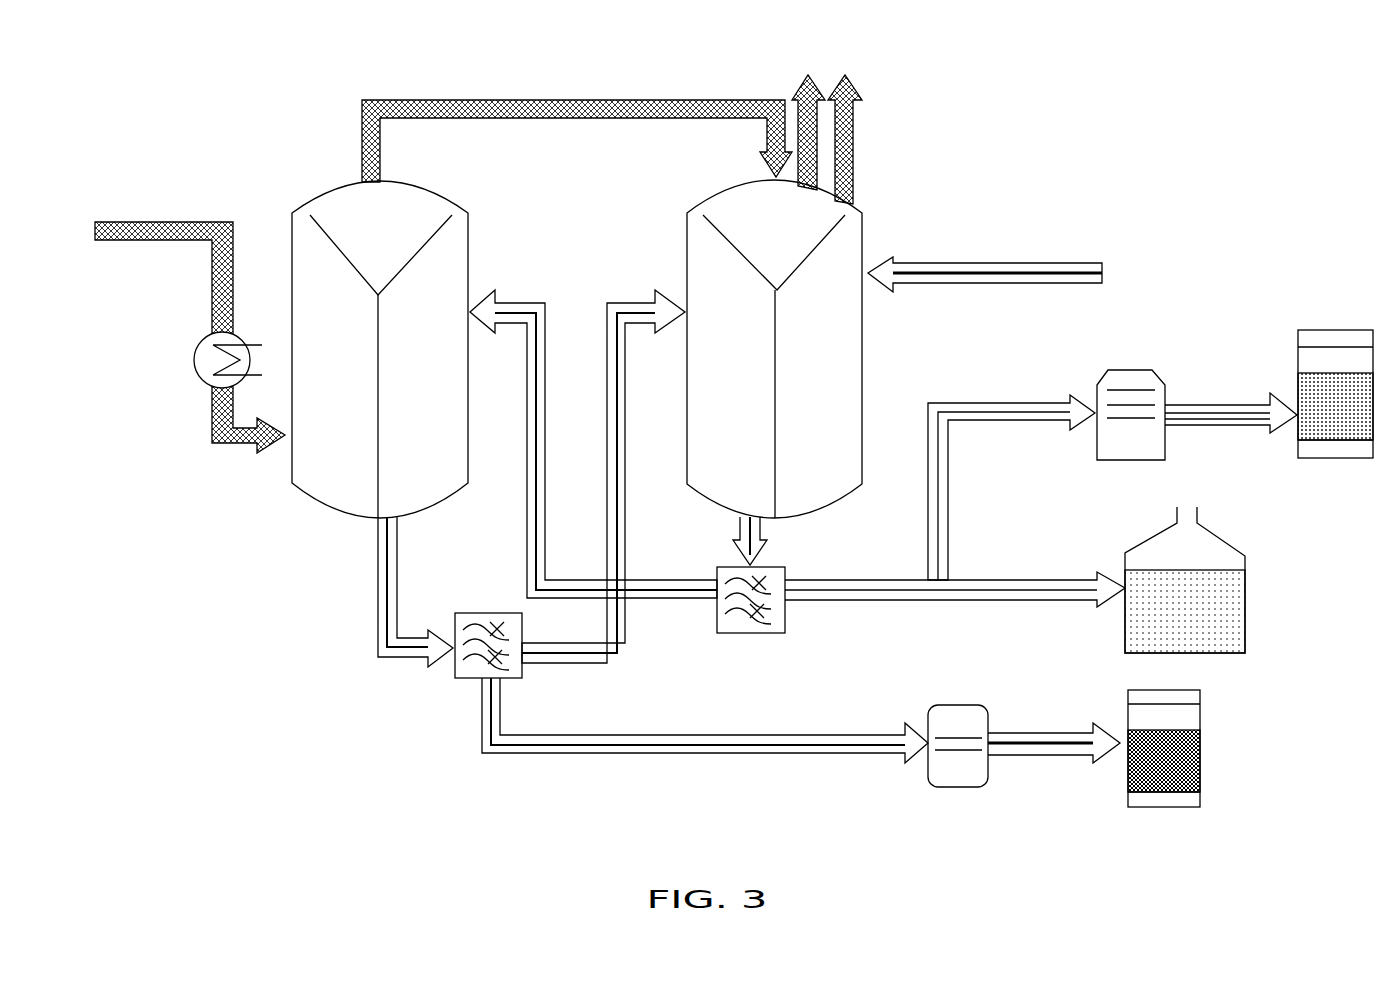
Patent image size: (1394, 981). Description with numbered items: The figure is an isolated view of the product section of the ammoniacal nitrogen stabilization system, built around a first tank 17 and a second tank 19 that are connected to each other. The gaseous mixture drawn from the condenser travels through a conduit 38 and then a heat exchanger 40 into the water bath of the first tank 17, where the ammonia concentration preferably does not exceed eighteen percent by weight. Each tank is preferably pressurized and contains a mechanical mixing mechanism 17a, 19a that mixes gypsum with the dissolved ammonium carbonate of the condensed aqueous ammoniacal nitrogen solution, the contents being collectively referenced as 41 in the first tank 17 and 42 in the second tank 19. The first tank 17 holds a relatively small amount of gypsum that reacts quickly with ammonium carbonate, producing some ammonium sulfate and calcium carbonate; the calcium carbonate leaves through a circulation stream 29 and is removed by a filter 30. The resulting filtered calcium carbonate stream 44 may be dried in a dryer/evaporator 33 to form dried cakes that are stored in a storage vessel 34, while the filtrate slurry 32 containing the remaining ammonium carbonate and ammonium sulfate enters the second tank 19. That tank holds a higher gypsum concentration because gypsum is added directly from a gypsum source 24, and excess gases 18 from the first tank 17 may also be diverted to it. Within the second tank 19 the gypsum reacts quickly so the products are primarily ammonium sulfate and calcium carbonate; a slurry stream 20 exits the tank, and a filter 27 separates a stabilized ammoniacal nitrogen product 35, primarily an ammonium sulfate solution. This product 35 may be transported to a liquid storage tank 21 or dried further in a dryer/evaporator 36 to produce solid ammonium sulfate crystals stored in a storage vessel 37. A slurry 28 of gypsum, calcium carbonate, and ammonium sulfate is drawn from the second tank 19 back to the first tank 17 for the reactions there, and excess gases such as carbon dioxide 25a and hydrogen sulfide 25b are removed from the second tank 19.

The first tank 17 is at (392, 237).
The mechanical mixing mechanism 17a is at (378, 383).
The gypsum and dissolved ammonium carbonate mixture 41 is at (358, 483).
The second tank 19 is at (787, 236).
The mechanical mixing mechanism 19a is at (775, 332).
The gypsum and dissolved ammonium carbonate mixture 42 is at (752, 488).
The conduit 38 is at (167, 225).
The heat exchanger 40 is at (195, 368).
The excess gases 18 is at (545, 100).
The carbon dioxide 25a is at (802, 85).
The hydrogen sulfide 25b is at (857, 85).
The gypsum source 24 is at (1027, 265).
The slurry 28 is at (542, 510).
The filtrate slurry 32 is at (627, 298).
The circulation stream 29 is at (378, 565).
The filter 30 is at (500, 613).
The filtered calcium carbonate stream 44 is at (765, 735).
The dryer/evaporator 33 is at (965, 788).
The storage vessel 34 is at (1197, 745).
The slurry stream 20 is at (738, 530).
The filter 27 is at (768, 632).
The stabilized ammoniacal nitrogen product 35 is at (830, 580).
The dryer/evaporator 36 is at (1142, 455).
The storage vessel 37 is at (1345, 425).
The liquid storage tank 21 is at (1197, 617).